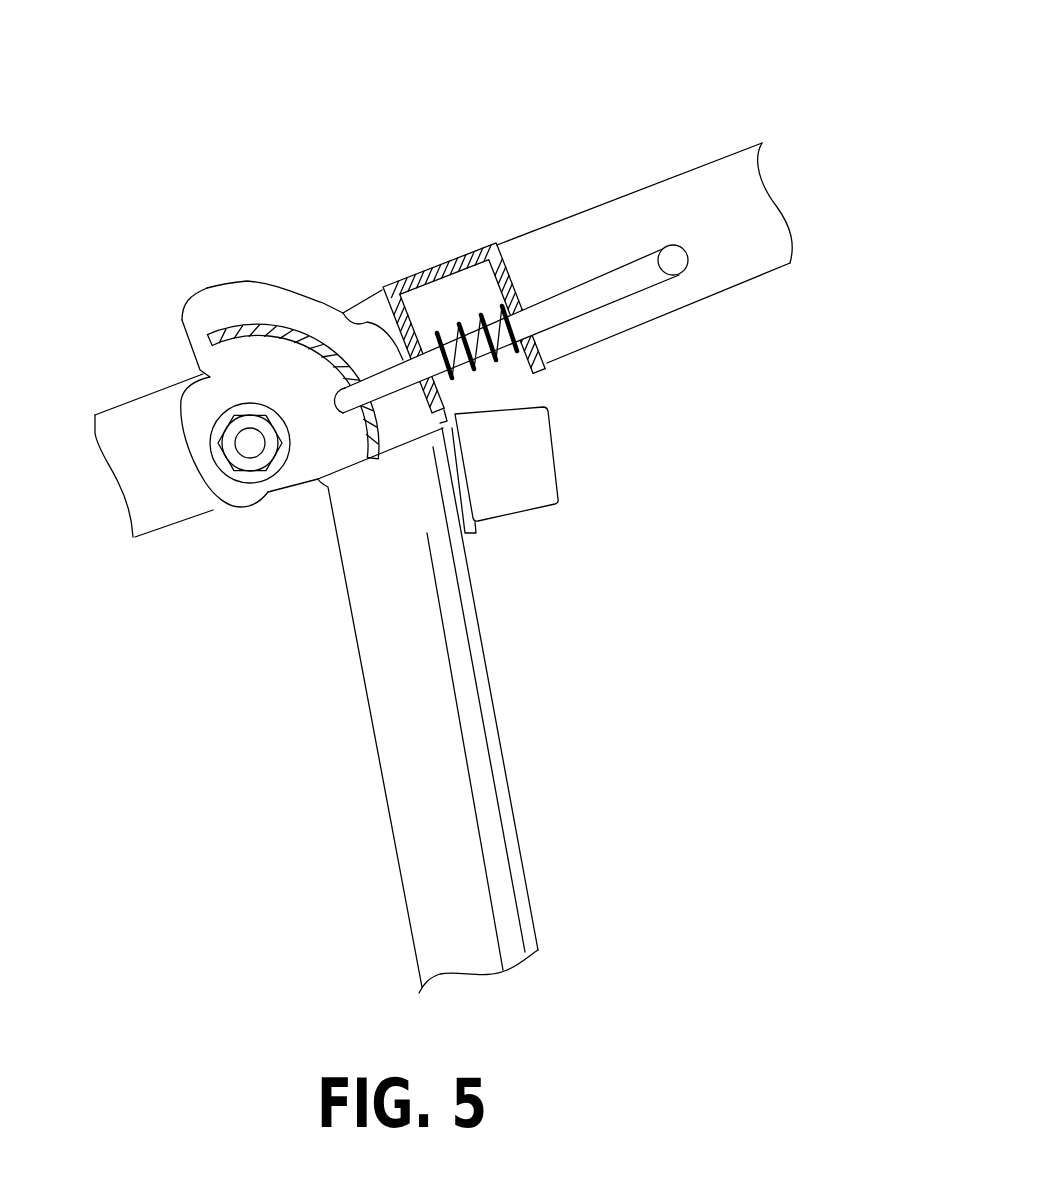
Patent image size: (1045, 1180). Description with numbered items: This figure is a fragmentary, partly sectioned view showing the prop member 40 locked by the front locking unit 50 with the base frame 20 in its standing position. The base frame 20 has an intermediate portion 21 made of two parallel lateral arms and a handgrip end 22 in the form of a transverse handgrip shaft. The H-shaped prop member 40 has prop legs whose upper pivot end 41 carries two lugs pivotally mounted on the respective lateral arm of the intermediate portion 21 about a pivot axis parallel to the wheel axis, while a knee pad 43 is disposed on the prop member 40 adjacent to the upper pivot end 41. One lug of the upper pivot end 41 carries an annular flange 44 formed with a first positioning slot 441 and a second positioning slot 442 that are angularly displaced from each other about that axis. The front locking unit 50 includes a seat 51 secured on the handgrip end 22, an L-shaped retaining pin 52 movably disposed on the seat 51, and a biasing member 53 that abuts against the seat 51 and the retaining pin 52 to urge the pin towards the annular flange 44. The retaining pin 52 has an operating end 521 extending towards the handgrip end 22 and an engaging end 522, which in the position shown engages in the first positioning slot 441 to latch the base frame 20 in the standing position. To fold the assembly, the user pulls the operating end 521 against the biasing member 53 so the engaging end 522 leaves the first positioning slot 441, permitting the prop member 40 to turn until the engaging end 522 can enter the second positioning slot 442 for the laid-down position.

The base frame 20 is at (425, 285).
The intermediate portion 21 is at (130, 420).
The handgrip end 22 is at (752, 268).
The prop member 40 is at (530, 707).
The upper pivot end 41 is at (233, 292).
The knee pad 43 is at (533, 495).
The annular flange 44 is at (212, 395).
The first positioning slot 441 is at (368, 405).
The second positioning slot 442 is at (205, 306).
The front locking unit 50 is at (438, 310).
The seat 51 is at (472, 248).
The retaining pin 52 is at (438, 310).
The operating end 521 is at (677, 253).
The engaging end 522 is at (337, 414).
The biasing member 53 is at (505, 345).